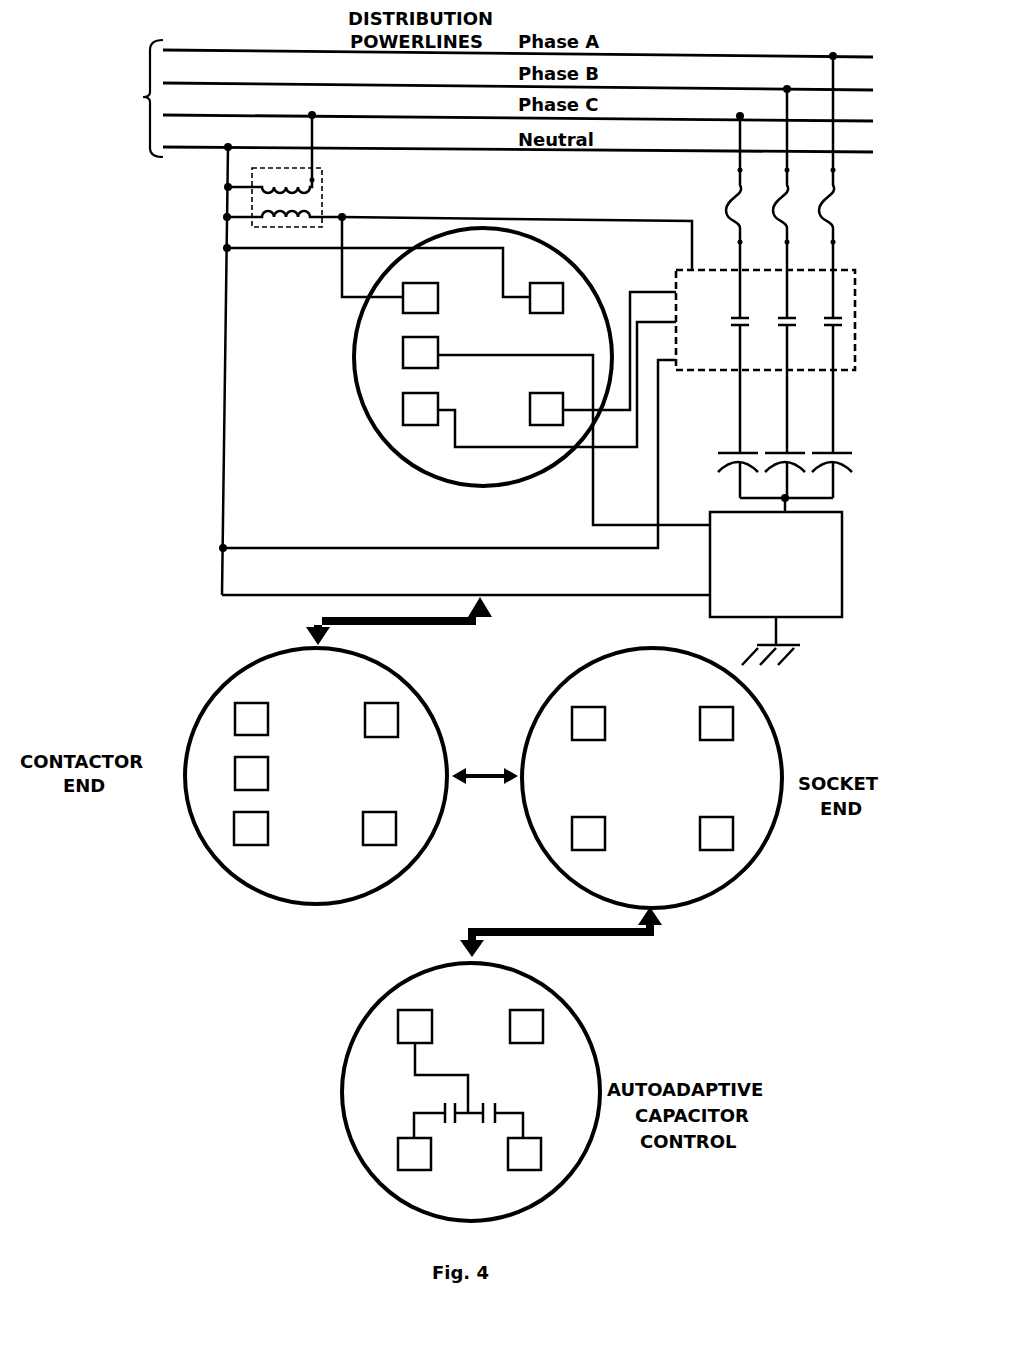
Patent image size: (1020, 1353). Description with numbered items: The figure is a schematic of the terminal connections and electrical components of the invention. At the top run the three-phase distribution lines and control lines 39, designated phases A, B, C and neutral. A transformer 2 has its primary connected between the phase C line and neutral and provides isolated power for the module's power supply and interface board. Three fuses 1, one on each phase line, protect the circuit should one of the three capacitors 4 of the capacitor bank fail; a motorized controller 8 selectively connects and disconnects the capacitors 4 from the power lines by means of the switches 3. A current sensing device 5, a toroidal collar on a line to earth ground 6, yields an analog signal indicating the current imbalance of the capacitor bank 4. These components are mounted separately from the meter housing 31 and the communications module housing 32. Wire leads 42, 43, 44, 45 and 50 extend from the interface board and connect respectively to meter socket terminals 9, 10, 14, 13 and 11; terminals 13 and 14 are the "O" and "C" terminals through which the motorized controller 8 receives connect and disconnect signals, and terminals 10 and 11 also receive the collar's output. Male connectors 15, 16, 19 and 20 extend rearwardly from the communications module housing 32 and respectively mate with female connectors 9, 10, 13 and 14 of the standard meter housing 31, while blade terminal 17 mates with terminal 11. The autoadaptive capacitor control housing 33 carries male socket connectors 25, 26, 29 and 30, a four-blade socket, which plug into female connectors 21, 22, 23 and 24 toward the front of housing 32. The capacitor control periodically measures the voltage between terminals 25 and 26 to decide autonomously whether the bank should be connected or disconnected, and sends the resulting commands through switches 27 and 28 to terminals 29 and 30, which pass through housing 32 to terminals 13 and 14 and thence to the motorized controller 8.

The fuses 1 is at (750, 191).
The transformer 2 is at (331, 185).
The switches 3 is at (734, 326).
The capacitors 4 is at (724, 452).
The current sensing device 5 is at (843, 529).
The earth ground 6 is at (795, 647).
The motorized controller 8 is at (676, 268).
The meter socket terminal 9 is at (416, 283).
The meter socket terminal 10 is at (548, 283).
The meter socket terminal 11 is at (403, 357).
The O terminal 13 is at (440, 393).
The C terminal 14 is at (530, 393).
The male connector 15 is at (252, 703).
The male connector 16 is at (382, 703).
The blade terminal 17 is at (235, 757).
The male connector 19 is at (250, 845).
The male connector 20 is at (378, 845).
The female connector 21 is at (592, 707).
The female connector 22 is at (716, 707).
The female connector 23 is at (590, 850).
The female connector 24 is at (714, 850).
The male socket connector 25 is at (398, 1022).
The male socket connector 26 is at (543, 1025).
The switch 27 is at (444, 1103).
The switch 28 is at (496, 1103).
The terminal 29 is at (398, 1150).
The terminal 30 is at (541, 1150).
The meter housing 31 is at (570, 258).
The communications module housing 32 is at (386, 666).
The capacitor control housing 33 is at (392, 988).
The distribution lines and control lines 39 is at (143, 97).
The wire lead 42 is at (356, 214).
The wire lead 43 is at (330, 252).
The wire lead 44 is at (598, 412).
The wire lead 45 is at (616, 448).
The wire lead 50 is at (660, 527).